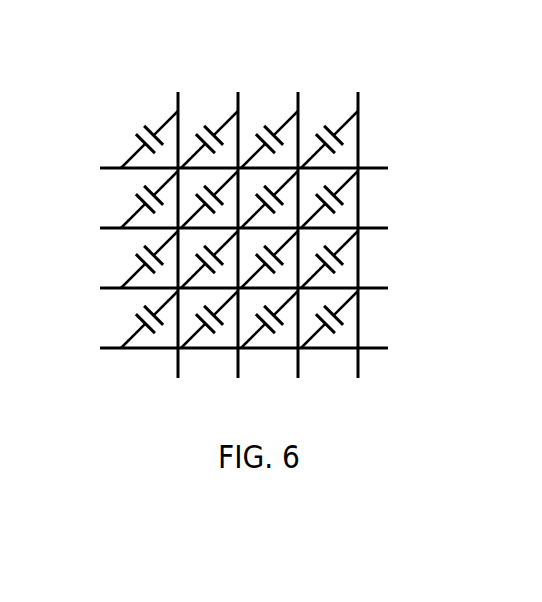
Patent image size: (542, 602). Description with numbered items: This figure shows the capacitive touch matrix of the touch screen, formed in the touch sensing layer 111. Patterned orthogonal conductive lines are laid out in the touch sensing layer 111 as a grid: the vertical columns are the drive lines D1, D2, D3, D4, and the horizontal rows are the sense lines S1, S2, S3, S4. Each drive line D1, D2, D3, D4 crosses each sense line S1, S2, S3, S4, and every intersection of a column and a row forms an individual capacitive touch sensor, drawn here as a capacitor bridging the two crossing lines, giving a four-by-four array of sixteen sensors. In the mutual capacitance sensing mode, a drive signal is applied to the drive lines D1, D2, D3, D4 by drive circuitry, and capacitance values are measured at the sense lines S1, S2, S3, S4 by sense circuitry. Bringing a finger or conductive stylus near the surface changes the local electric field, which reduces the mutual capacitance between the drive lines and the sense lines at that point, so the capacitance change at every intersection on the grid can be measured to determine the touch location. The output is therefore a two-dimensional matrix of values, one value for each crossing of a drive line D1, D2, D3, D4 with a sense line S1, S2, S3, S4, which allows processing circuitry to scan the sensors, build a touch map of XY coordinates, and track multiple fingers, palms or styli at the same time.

The touch sensing layer 111 is at (80, 65).
The drive line D1 is at (178, 220).
The drive line D2 is at (238, 220).
The drive line D3 is at (298, 220).
The drive line D4 is at (358, 220).
The sense line S1 is at (229, 167).
The sense line S2 is at (229, 227).
The sense line S3 is at (229, 287).
The sense line S4 is at (229, 347).